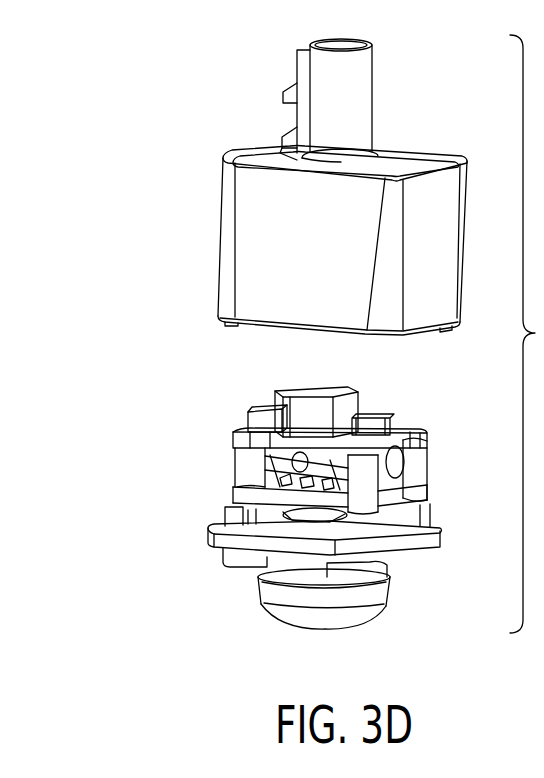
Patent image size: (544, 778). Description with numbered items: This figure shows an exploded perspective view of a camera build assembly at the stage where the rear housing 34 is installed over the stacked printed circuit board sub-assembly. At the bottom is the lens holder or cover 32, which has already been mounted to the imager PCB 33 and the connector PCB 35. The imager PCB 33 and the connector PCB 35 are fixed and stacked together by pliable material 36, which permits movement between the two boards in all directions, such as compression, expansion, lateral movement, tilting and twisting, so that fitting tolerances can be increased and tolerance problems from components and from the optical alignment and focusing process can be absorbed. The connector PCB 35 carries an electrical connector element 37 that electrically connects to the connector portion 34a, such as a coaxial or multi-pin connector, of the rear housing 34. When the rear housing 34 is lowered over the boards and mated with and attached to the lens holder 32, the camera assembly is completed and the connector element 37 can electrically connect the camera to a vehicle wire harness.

The connector portion 34a is at (372, 84).
The rear housing 34 is at (445, 249).
The electrical connector element 37 is at (290, 383).
The connector PCB 35 is at (250, 426).
The pliable material 36 is at (245, 466).
The imager PCB 33 is at (428, 507).
The lens holder 32 is at (370, 613).